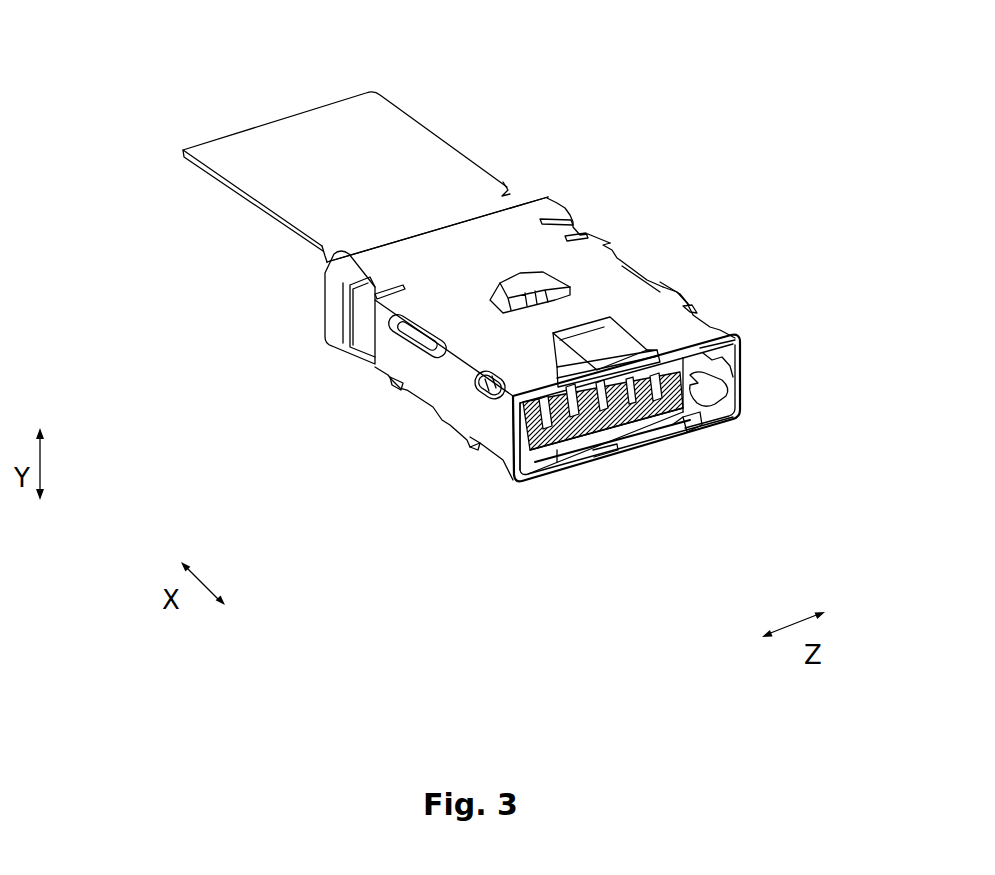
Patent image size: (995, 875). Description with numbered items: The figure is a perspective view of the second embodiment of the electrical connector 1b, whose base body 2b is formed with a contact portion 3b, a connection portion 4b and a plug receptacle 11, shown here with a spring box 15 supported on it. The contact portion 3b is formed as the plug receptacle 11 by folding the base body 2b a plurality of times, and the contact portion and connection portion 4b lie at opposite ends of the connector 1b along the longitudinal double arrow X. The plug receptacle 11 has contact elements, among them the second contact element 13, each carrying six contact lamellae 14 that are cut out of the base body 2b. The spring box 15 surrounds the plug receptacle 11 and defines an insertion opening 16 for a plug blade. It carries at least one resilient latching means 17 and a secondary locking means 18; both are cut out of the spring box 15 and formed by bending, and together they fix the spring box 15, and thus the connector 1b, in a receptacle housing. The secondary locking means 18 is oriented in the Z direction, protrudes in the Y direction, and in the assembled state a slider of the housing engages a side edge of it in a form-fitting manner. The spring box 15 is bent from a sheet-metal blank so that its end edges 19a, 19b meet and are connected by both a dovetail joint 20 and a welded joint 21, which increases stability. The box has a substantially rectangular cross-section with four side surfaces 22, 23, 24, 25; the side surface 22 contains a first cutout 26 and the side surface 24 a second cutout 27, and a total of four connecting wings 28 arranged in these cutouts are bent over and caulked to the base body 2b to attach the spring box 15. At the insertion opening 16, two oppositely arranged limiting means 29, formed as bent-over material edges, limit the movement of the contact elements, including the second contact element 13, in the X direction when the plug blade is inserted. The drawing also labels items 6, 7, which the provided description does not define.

The electrical connector 1b is at (647, 132).
The base body 2b is at (330, 264).
The contact portion 3b is at (578, 454).
The plug receptacle 11 is at (606, 352).
The connection portion 4b is at (210, 177).
The shielding element 6 is at (775, 448).
The shielding sleeve 7 is at (700, 422).
The second contact element 13 is at (512, 438).
The contact lamellae 14 is at (587, 398).
The spring box 15 is at (672, 279).
The insertion opening 16 is at (673, 442).
The resilient latching means 17 is at (462, 378).
The secondary locking means 18 is at (527, 273).
The end edge 19a is at (741, 374).
The end edge 19b is at (743, 402).
The dovetail joint 20 is at (717, 330).
The welded joint 21 is at (737, 339).
The side surface 22 is at (398, 357).
The side surface 23 is at (463, 247).
The side surface 24 is at (618, 240).
The side surface 25 is at (517, 480).
The first cutout 26 is at (325, 332).
The second cutout 27 is at (585, 216).
The connecting wings 28 is at (367, 273).
The limiting means 29 is at (640, 407).